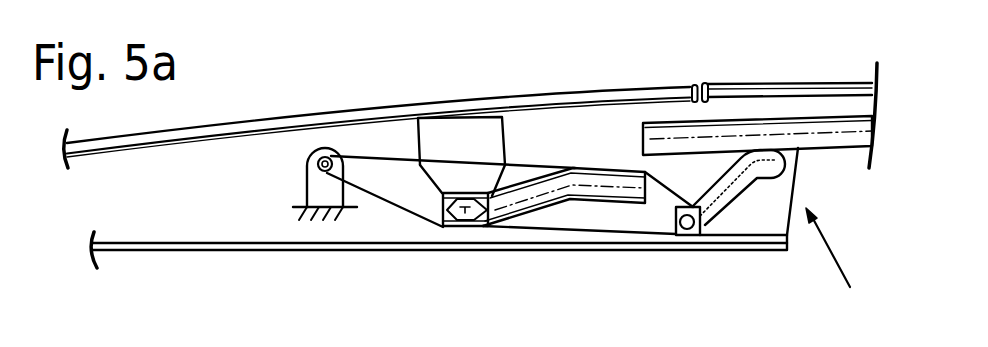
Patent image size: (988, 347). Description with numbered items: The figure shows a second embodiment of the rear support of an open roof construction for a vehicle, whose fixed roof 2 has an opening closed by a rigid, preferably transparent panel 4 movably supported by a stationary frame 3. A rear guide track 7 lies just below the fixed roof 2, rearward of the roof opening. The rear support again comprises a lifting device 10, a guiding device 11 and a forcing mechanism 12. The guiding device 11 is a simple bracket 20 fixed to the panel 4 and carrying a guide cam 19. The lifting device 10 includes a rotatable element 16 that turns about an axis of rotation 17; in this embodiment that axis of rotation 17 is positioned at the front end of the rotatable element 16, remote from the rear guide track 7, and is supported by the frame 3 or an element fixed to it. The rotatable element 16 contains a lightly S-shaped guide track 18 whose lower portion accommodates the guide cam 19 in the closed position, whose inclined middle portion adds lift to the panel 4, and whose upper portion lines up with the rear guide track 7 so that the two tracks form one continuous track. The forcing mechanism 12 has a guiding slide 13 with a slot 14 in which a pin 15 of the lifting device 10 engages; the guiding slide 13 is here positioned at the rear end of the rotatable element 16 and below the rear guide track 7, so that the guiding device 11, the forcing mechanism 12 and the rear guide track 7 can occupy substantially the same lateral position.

The fixed roof 2 is at (767, 85).
The frame 3 is at (267, 253).
The panel 4 is at (347, 107).
The rear guide track 7 is at (840, 137).
The lifting device 10 is at (390, 227).
The guiding device 11 is at (423, 117).
The forcing mechanism 12 is at (832, 265).
The guiding slide 13 is at (775, 208).
The slot 14 is at (737, 200).
The pin 15 is at (693, 238).
The rotatable element 16 is at (628, 213).
The axis of rotation 17 is at (325, 148).
The guide track 18 is at (540, 193).
The guide cam 19 is at (465, 212).
The bracket 20 is at (473, 133).